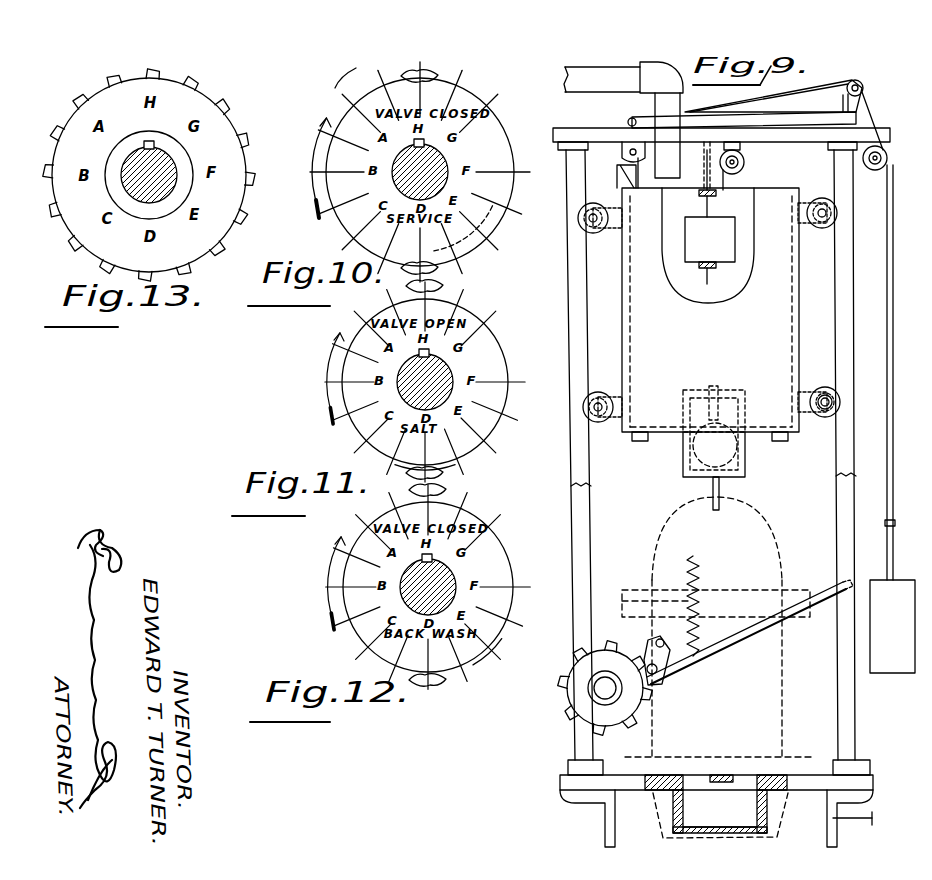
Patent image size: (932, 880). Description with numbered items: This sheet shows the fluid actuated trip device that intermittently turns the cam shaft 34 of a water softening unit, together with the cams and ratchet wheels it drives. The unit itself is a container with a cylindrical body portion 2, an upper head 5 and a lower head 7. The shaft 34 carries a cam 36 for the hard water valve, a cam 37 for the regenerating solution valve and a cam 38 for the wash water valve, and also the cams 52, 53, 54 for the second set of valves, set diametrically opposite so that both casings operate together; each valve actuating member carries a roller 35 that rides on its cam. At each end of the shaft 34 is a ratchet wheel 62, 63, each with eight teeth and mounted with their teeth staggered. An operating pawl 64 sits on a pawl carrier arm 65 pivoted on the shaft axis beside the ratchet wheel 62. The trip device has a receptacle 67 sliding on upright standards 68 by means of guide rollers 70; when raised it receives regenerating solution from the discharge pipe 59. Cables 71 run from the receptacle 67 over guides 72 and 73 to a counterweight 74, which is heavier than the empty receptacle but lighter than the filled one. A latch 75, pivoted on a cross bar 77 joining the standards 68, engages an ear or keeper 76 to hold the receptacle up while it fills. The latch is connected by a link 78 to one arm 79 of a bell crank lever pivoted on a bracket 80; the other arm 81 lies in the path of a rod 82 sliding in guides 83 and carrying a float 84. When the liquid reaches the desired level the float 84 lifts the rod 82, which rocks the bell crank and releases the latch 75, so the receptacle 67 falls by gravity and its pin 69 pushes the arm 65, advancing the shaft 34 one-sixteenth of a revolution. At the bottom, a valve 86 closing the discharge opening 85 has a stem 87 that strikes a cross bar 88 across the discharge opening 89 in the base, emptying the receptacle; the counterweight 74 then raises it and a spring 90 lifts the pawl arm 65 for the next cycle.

In FIG. 9, the cylindrical body portion 2 is at (782, 683).
In FIG. 9, the upper head 5 is at (780, 565).
In FIG. 9, the lower head 7 is at (782, 825).
In FIG. 13, the cam shaft 34 is at (166, 162).
In FIG. 10, the cam shaft 34 is at (447, 164).
In FIG. 11, the cam shaft 34 is at (452, 373).
In FIG. 12, the cam shaft 34 is at (455, 578).
In FIG. 9, the cam shaft 34 is at (605, 688).
In FIG. 10, the roller 35 is at (440, 66).
In FIG. 11, the roller 35 is at (446, 276).
In FIG. 12, the roller 35 is at (450, 480).
In FIG. 12, the cam 36 is at (470, 548).
In FIG. 11, the cam 37 is at (467, 345).
In FIG. 10, the cam 38 is at (463, 137).
In FIG. 11, the cam 52 is at (452, 462).
In FIG. 12, the cam 53 is at (478, 664).
In FIG. 10, the cam 54 is at (373, 125).
In FIG. 9, the discharge pipe 59 is at (583, 80).
In FIG. 13, the ratchet wheel 62 is at (167, 175).
In FIG. 9, the ratchet wheel 62 is at (616, 722).
In FIG. 13, the ratchet wheel 63 is at (167, 175).
In FIG. 9, the operating pawl 64 is at (660, 680).
In FIG. 9, the pawl carrier arm 65 is at (728, 637).
In FIG. 9, the receptacle 67 is at (710, 314).
In FIG. 9, the upright standards 68 is at (582, 542).
In FIG. 9, the pin 69 is at (822, 410).
In FIG. 9, the guide rollers 70 is at (593, 233).
In FIG. 9, the cables 71 is at (893, 410).
In FIG. 9, the guide 72 is at (744, 165).
In FIG. 9, the guide 73 is at (887, 160).
In FIG. 9, the counterweight 74 is at (892, 626).
In FIG. 9, the latch 75 is at (636, 186).
In FIG. 9, the ear or keeper 76 is at (618, 178).
In FIG. 9, the cross bar 77 is at (600, 116).
In FIG. 9, the link 78 is at (768, 95).
In FIG. 9, the bell crank lever arm 79 is at (858, 106).
In FIG. 9, the bracket 80 is at (862, 84).
In FIG. 9, the bell crank lever arm 81 is at (818, 96).
In FIG. 9, the rod 82 is at (704, 162).
In FIG. 9, the guides 83 is at (699, 195).
In FIG. 9, the float 84 is at (710, 240).
In FIG. 9, the discharge opening 85 is at (745, 468).
In FIG. 9, the valve 86 is at (693, 450).
In FIG. 9, the stem 87 is at (719, 505).
In FIG. 9, the cross bar 88 is at (722, 775).
In FIG. 9, the discharge opening 89 is at (720, 811).
In FIG. 9, the spring 90 is at (688, 562).